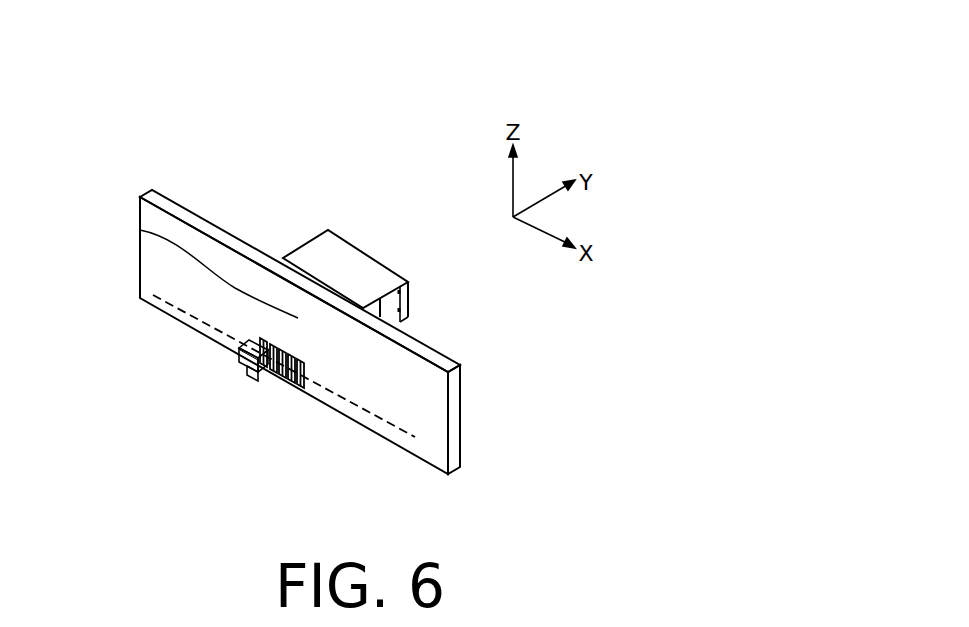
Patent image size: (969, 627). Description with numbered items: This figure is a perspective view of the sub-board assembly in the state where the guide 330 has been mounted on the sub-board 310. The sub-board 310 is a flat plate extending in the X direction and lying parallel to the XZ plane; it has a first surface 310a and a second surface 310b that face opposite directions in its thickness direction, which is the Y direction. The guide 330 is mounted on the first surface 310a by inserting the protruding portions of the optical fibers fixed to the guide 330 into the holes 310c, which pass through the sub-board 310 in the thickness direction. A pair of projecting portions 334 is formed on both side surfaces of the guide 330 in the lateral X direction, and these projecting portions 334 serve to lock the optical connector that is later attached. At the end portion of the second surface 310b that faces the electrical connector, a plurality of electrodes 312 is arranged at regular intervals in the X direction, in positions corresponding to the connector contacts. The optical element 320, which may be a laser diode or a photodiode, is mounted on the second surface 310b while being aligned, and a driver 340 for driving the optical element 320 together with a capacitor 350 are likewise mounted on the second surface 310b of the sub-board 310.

The sub-board 310 is at (165, 206).
The first surface 310a is at (462, 412).
The second surface 310b is at (431, 452).
The holes 310c is at (140, 230).
The electrodes 312 is at (266, 381).
The optical element 320 is at (236, 340).
The guide 330 is at (317, 242).
The projecting portions 334 is at (411, 303).
The driver 340 is at (240, 351).
The capacitor 350 is at (245, 368).